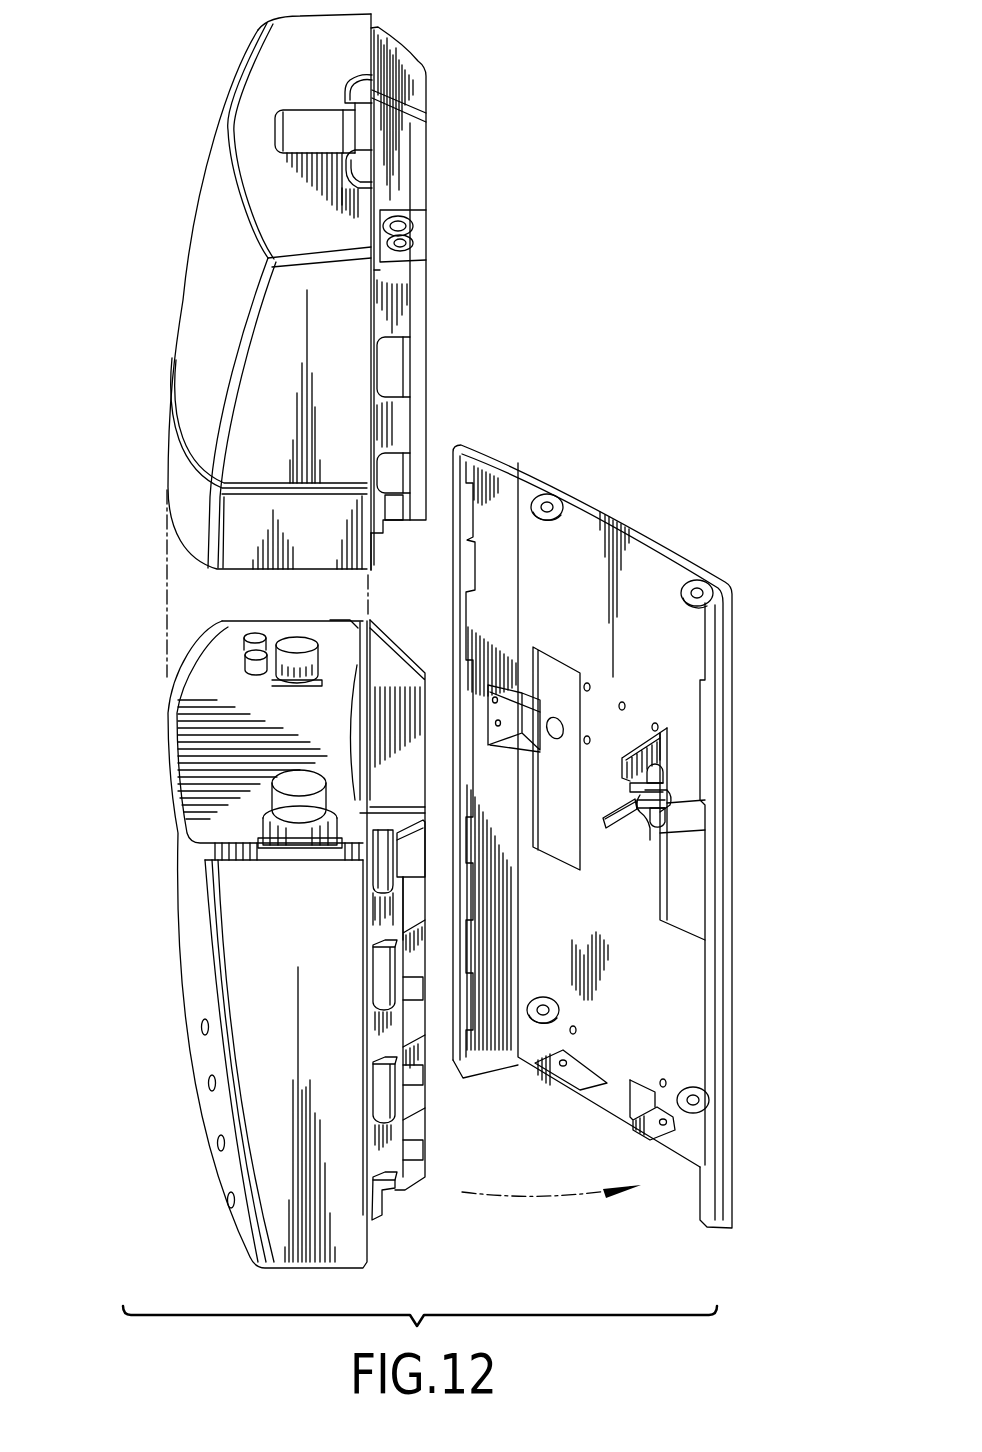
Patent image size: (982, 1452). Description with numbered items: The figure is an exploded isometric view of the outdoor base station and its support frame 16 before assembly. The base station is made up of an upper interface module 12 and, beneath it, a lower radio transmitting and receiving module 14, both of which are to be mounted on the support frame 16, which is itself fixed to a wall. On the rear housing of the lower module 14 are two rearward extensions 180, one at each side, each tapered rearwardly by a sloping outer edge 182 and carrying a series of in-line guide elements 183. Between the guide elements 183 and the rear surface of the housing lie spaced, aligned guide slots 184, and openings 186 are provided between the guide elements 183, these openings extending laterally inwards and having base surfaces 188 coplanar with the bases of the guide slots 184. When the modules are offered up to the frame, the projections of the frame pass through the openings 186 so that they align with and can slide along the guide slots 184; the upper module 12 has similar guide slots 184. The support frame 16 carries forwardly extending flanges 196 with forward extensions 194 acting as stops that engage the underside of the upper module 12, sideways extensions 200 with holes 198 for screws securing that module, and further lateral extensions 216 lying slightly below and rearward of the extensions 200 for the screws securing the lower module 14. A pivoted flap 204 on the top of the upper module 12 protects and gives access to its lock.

The upper interface module 12 is at (163, 357).
The lower radio transmitting and receiving module 14 is at (165, 834).
The support frame 16 is at (678, 1017).
The rearward extensions 180 is at (413, 69).
The pivoted flap 204 is at (293, 128).
The sloping outer edge 182 is at (370, 897).
The guide elements 183 is at (370, 873).
The guide slots 184 is at (370, 860).
The openings 186 is at (370, 977).
The base surfaces 188 is at (370, 930).
The forward extensions 194 is at (633, 815).
The forwardly extending flanges 196 is at (672, 744).
The holes 198 is at (677, 783).
The sideways extensions 200 is at (675, 812).
The further lateral extensions 216 is at (672, 830).